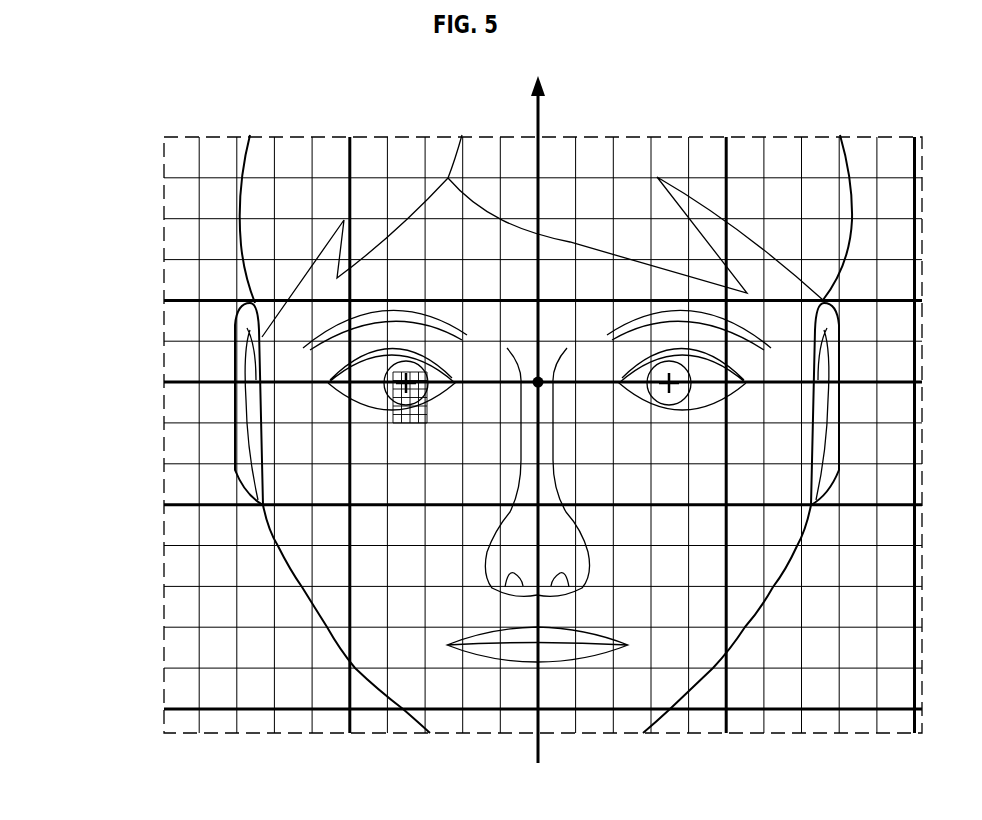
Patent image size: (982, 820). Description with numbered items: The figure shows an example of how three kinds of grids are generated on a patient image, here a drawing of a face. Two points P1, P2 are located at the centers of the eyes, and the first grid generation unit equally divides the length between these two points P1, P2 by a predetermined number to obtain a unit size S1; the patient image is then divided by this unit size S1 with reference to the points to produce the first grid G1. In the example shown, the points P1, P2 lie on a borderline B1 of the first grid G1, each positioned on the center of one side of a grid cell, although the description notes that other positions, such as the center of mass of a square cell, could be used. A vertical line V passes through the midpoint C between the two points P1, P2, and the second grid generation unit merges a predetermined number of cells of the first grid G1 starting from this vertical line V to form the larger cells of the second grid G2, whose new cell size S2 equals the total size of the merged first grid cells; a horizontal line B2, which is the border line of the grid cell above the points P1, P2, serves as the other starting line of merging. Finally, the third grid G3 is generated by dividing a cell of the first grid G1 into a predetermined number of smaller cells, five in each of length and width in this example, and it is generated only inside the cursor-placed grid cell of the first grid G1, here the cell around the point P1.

The first grid G1 is at (206, 580).
The second grid G2 is at (206, 697).
The third grid G3 is at (393, 413).
The borderline B1 is at (152, 382).
The horizontal line B2 is at (152, 300).
The vertical line V is at (549, 418).
The midpoint C is at (528, 384).
The point P1 is at (406, 361).
The point P2 is at (668, 361).
The unit size S1 is at (587, 505).
The second grid cell size S2 is at (538, 693).